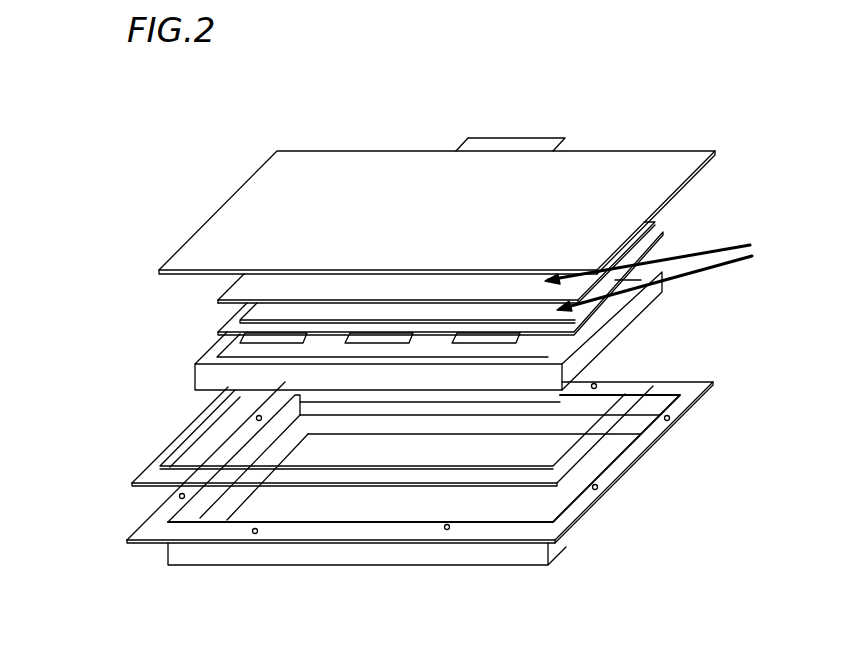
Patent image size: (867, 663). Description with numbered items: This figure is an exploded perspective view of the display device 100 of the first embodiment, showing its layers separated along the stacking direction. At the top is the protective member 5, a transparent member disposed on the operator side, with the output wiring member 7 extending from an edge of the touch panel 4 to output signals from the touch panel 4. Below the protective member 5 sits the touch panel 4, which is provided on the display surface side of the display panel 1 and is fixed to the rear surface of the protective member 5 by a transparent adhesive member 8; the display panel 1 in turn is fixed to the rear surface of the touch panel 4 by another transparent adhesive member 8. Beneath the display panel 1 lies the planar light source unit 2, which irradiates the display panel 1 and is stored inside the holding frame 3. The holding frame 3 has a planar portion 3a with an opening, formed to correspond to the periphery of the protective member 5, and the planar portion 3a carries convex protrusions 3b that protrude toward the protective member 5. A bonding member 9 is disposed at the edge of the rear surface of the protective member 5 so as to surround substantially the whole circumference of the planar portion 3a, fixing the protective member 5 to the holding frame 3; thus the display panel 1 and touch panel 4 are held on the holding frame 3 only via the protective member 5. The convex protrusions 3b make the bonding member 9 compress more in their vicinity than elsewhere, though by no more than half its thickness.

The display device 100 is at (570, 580).
The protective member 5 is at (347, 163).
The output wiring member 7 is at (520, 143).
The touch panel 4 is at (230, 294).
The display panel 1 is at (232, 330).
The transparent adhesive member 8 is at (657, 269).
The planar light source unit 2 is at (195, 375).
The bonding member 9 is at (697, 390).
The holding frame 3 is at (403, 491).
The planar portion 3a is at (645, 445).
The convex protrusions 3b is at (596, 489).